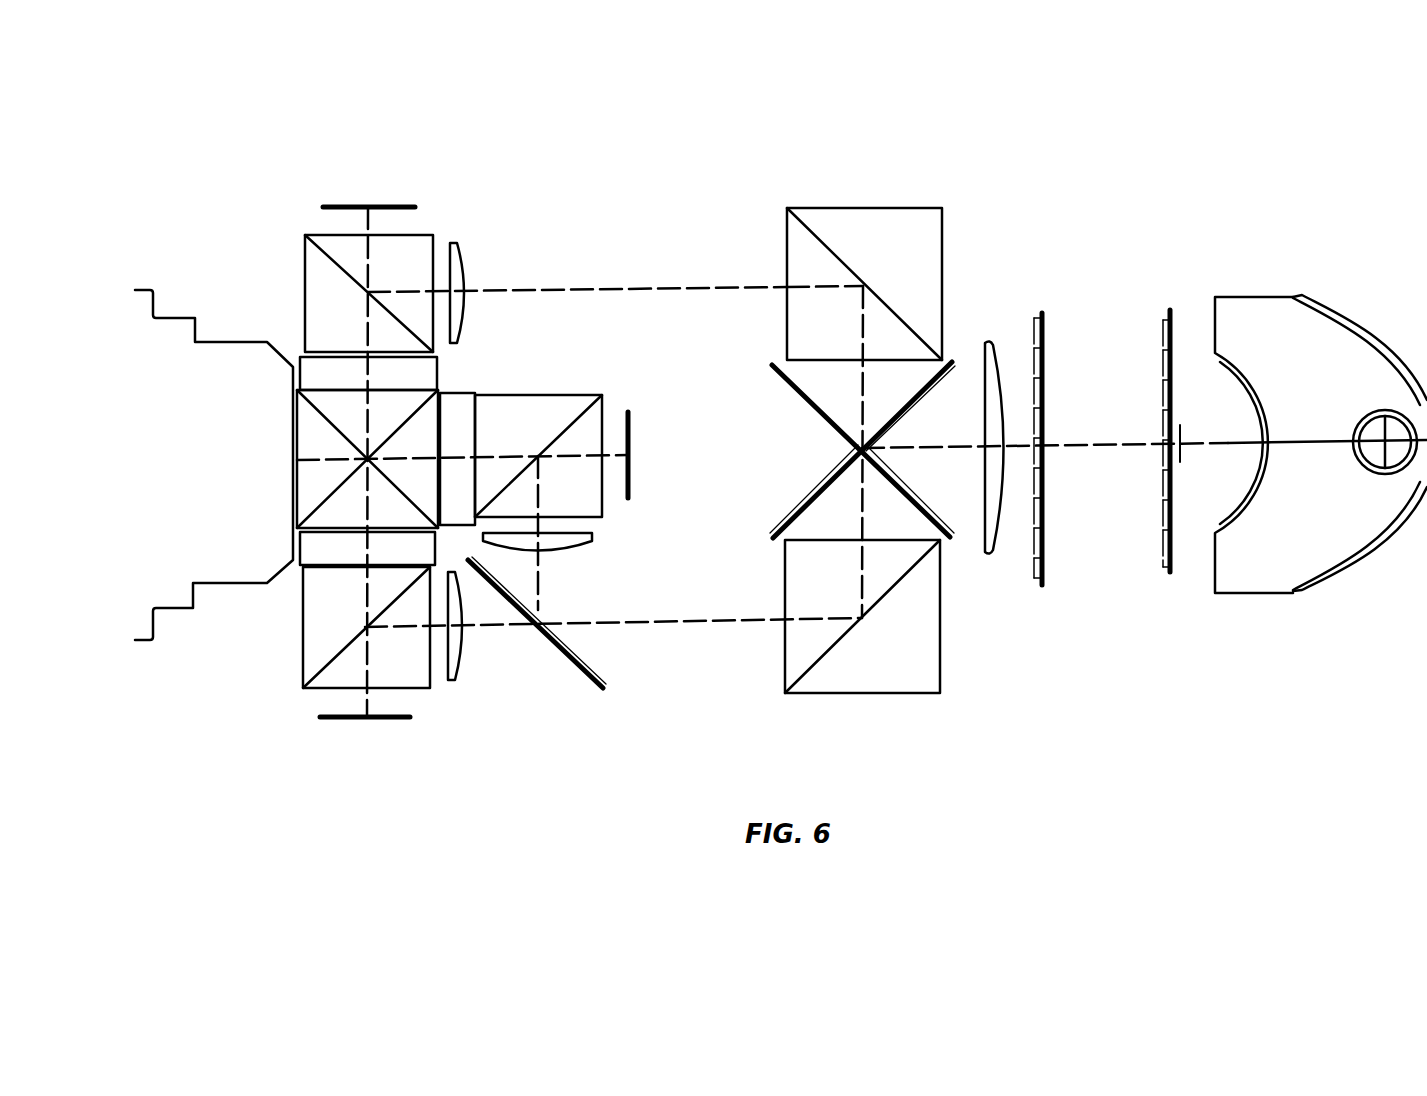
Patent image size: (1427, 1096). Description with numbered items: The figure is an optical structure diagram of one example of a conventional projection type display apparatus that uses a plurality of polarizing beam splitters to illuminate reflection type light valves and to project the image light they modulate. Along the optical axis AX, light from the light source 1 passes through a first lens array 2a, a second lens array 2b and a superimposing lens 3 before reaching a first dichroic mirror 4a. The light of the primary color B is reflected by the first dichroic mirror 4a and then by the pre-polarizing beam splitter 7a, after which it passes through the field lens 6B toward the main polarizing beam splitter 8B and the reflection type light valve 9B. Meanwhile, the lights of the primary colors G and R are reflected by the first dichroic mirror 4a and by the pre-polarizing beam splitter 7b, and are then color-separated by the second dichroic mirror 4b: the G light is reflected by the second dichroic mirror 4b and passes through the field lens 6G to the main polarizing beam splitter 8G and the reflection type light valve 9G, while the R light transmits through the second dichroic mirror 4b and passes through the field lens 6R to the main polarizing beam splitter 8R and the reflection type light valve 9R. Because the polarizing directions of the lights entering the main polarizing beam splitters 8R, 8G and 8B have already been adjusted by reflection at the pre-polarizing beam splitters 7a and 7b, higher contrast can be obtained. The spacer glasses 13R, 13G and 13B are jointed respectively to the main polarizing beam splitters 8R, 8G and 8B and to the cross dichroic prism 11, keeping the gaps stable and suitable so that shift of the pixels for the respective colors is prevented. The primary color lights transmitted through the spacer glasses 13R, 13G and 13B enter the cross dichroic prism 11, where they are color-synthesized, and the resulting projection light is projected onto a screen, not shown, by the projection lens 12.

The light source 1 is at (1250, 295).
The first lens array 2a is at (1170, 577).
The second lens array 2b is at (1040, 580).
The superimposing lens 3 is at (988, 342).
The first dichroic mirror 4a is at (775, 365).
The second dichroic mirror 4b is at (603, 690).
The field lens 6B is at (455, 243).
The field lens 6G is at (590, 552).
The field lens 6R is at (455, 680).
The pre-polarizing beam splitter 7a is at (878, 207).
The pre-polarizing beam splitter 7b is at (870, 695).
The main polarizing beam splitter 8B is at (305, 237).
The main polarizing beam splitter 8G is at (545, 395).
The main polarizing beam splitter 8R is at (300, 692).
The reflection type light valve 9B is at (415, 207).
The reflection type light valve 9G is at (628, 498).
The reflection type light valve 9R is at (408, 717).
The cross dichroic prism 11 is at (440, 390).
The projection lens 12 is at (258, 473).
The spacer glass 13B is at (293, 363).
The spacer glass 13G is at (470, 392).
The spacer glass 13R is at (293, 562).
The optical axis AX is at (1080, 447).